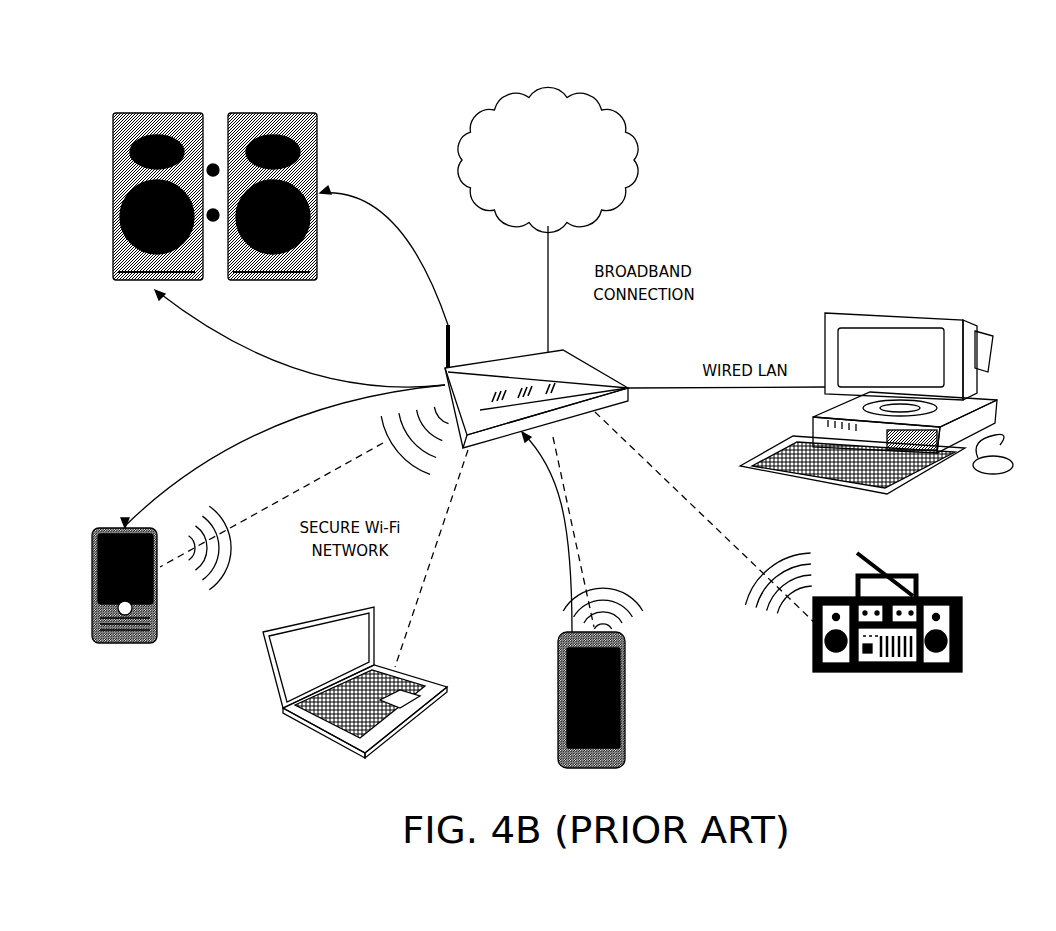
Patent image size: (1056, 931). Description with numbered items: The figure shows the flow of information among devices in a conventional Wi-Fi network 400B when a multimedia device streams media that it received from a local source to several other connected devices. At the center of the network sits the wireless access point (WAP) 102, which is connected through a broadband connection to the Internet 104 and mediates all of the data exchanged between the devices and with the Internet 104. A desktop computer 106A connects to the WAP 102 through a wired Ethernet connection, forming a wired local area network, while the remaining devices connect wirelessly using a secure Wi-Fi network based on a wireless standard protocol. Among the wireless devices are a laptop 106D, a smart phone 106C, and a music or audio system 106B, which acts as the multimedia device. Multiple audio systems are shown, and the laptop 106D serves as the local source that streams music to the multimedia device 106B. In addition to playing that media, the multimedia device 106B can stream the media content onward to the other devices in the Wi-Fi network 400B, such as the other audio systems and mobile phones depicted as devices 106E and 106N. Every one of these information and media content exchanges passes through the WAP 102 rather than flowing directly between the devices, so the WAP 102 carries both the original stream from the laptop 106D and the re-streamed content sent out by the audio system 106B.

The Wi-Fi network 400B is at (782, 218).
The wireless access point (WAP) 102 is at (572, 357).
The Internet 104 is at (619, 134).
The desktop computer 106A is at (935, 318).
The music or audio system 106B is at (940, 596).
The smart phone 106C is at (626, 686).
The laptop 106D is at (310, 720).
The device 106E is at (125, 283).
The device 106N is at (287, 133).